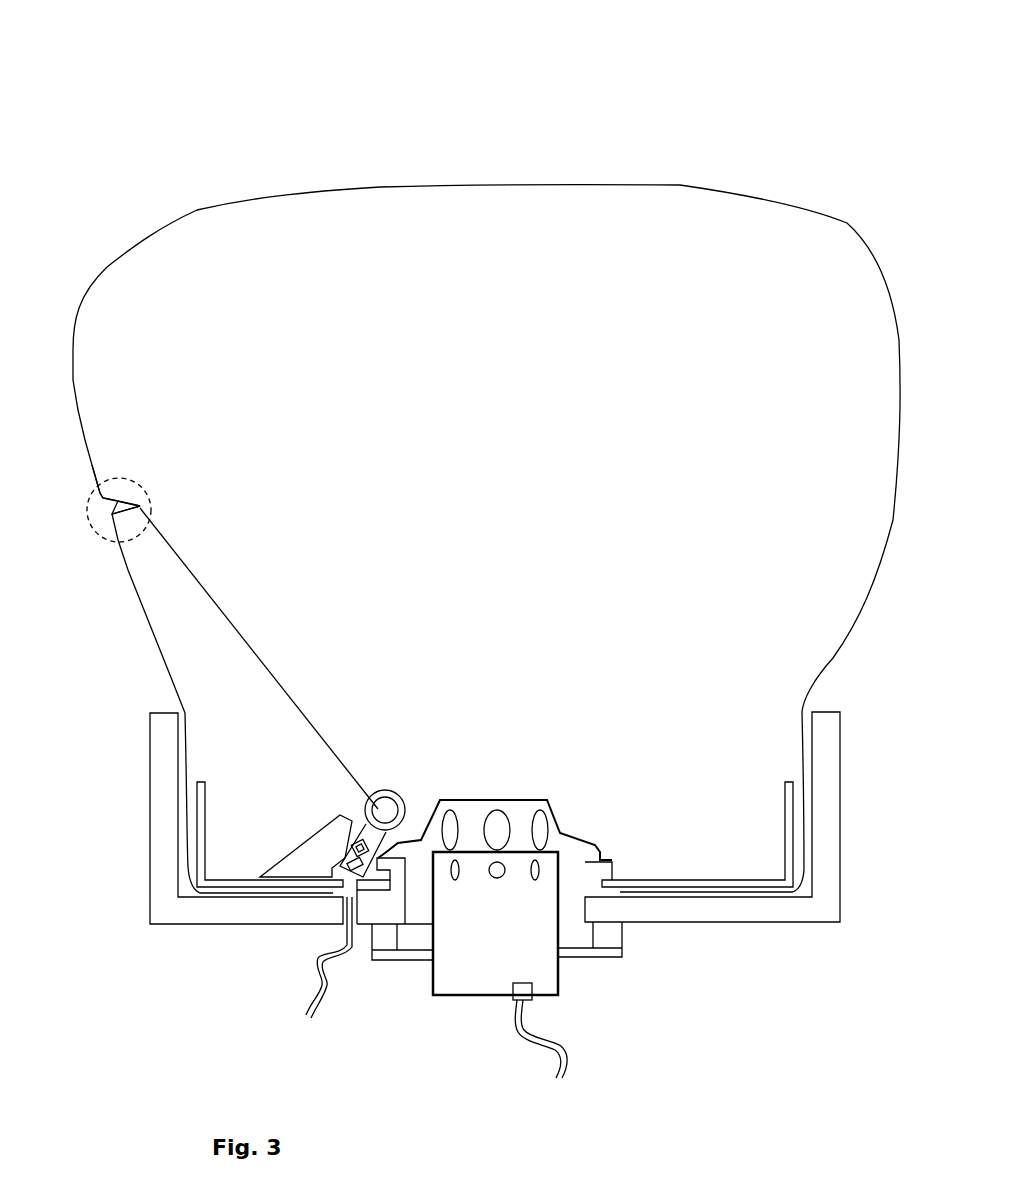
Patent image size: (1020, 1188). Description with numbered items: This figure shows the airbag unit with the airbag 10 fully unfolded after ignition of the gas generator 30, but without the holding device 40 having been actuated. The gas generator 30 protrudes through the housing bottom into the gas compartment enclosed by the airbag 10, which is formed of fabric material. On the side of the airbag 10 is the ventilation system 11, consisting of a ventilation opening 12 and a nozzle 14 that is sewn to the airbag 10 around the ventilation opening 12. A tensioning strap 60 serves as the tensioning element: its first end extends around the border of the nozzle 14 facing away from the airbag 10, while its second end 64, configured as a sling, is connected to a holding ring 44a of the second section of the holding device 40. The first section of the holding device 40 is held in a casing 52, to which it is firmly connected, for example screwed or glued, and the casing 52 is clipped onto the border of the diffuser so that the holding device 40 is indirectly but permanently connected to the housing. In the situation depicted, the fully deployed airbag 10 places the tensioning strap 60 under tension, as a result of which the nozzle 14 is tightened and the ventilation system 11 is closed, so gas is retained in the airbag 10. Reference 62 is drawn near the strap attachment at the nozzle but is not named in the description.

The airbag 10 is at (770, 198).
The ventilation system 11 is at (138, 480).
The ventilation opening 12 is at (108, 508).
The nozzle 14 is at (113, 500).
The gas generator 30 is at (533, 972).
The holding device 40 is at (373, 842).
The holding ring 44a is at (389, 792).
The casing 52 is at (293, 858).
The tensioning strap 60 is at (232, 628).
The strap end 62 is at (140, 502).
The second end 64 is at (381, 791).